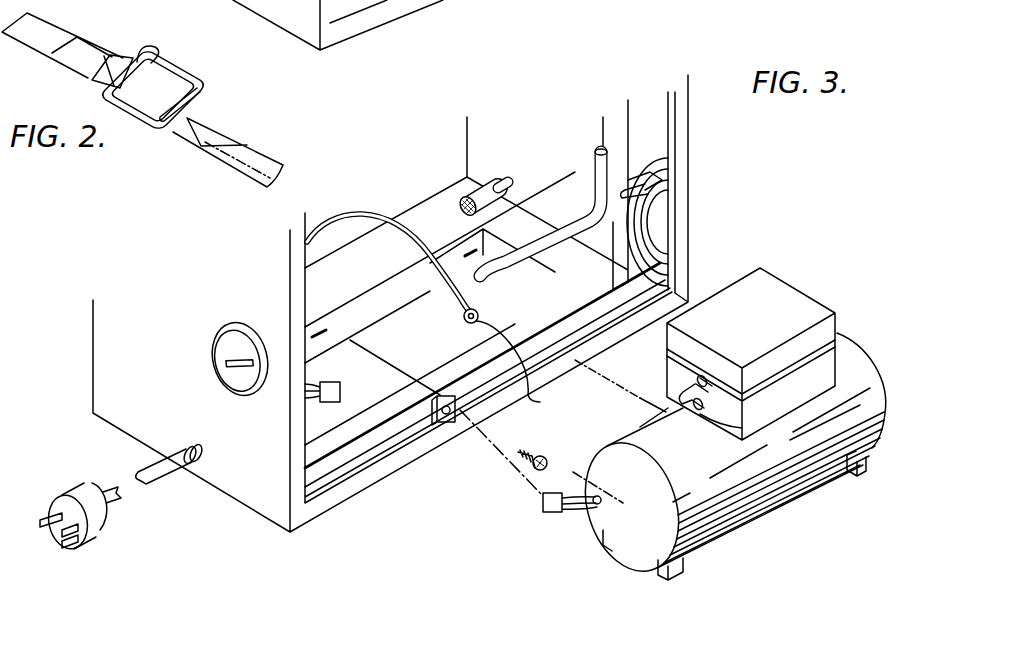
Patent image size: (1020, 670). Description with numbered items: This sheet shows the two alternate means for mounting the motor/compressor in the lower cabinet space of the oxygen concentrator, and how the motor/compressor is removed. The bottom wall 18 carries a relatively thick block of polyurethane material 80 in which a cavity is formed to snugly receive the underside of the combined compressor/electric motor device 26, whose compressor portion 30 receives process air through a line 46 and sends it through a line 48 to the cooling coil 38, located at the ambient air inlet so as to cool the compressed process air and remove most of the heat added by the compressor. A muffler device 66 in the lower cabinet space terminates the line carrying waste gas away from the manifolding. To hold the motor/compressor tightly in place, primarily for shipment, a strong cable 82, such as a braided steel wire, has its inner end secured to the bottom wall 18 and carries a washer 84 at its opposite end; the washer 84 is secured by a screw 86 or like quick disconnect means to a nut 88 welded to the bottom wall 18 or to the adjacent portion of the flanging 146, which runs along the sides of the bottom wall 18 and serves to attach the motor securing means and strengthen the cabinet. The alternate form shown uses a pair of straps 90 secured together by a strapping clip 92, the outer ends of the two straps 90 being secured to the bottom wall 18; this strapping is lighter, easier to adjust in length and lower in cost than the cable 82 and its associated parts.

In FIG. 3, the bottom wall 18 is at (391, 313).
In FIG. 3, the compressor/electric motor device 26 is at (714, 421).
In FIG. 3, the compressor portion 30 is at (770, 321).
In FIG. 3, the cooling coil 38 is at (657, 248).
In FIG. 3, the line 46 is at (508, 274).
In FIG. 3, the line 48 is at (645, 190).
In FIG. 3, the muffler device 66 is at (468, 188).
In FIG. 3, the block of polyurethane material 80 is at (600, 291).
In FIG. 3, the cable 82 is at (366, 213).
In FIG. 3, the washer 84 is at (521, 366).
In FIG. 3, the screw 86 is at (540, 455).
In FIG. 3, the nut 88 is at (447, 396).
In FIG. 2, the straps 90 is at (64, 33).
In FIG. 2, the strapping clip 92 is at (195, 75).
In FIG. 3, the flanging 146 is at (367, 480).